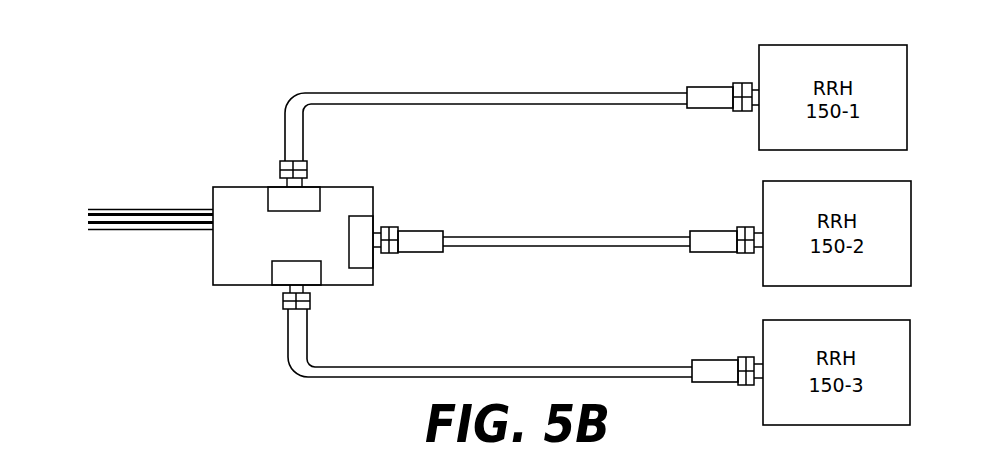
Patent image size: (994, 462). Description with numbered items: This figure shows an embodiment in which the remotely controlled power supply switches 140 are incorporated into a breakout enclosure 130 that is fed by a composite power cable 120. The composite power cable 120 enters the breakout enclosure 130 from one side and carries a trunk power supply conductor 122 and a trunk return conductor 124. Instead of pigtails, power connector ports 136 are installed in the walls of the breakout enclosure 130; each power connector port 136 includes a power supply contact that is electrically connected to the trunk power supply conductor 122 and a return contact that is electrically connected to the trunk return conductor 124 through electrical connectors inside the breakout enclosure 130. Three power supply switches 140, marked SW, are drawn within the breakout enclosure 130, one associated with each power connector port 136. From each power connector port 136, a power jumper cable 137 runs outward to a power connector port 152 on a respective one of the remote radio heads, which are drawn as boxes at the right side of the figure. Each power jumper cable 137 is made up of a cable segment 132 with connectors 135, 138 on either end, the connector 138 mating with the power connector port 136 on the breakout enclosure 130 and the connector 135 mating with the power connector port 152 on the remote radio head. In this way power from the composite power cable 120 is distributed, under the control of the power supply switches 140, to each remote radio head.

The composite power cable 120 is at (106, 184).
The trunk power supply conductor 122 is at (187, 208).
The trunk return conductor 124 is at (192, 228).
The breakout enclosure 130 is at (246, 288).
The cable segment 132 is at (532, 93).
The connector 135 is at (710, 240).
The power connector port 136 is at (308, 182).
The power jumper cable 137 is at (462, 76).
The connector 138 is at (290, 140).
The power supply switch 140 is at (270, 202).
The power connector port 152 is at (757, 85).